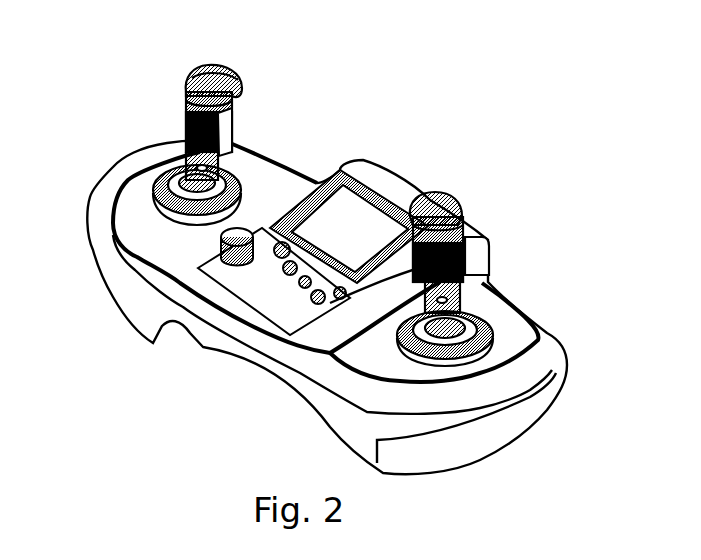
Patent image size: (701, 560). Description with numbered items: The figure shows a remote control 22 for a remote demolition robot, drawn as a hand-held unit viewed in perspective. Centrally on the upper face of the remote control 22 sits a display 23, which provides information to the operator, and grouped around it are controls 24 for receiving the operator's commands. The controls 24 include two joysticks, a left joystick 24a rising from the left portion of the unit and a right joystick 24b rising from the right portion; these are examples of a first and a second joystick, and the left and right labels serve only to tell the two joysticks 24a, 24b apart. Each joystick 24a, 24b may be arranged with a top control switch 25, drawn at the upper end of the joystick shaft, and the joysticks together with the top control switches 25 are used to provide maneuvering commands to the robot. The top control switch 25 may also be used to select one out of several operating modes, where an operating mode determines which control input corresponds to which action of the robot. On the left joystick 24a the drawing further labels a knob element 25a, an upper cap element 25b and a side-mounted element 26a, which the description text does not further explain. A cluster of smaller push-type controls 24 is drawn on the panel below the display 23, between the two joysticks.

The remote control 22 is at (117, 363).
The display 23 is at (358, 222).
The controls 24 is at (310, 310).
The left joystick 24a is at (175, 143).
The right joystick 24b is at (478, 278).
The top control switch 25 is at (452, 210).
The joystick knob 25a is at (185, 73).
The knob top 25b is at (230, 72).
The trigger switch 26a is at (232, 120).